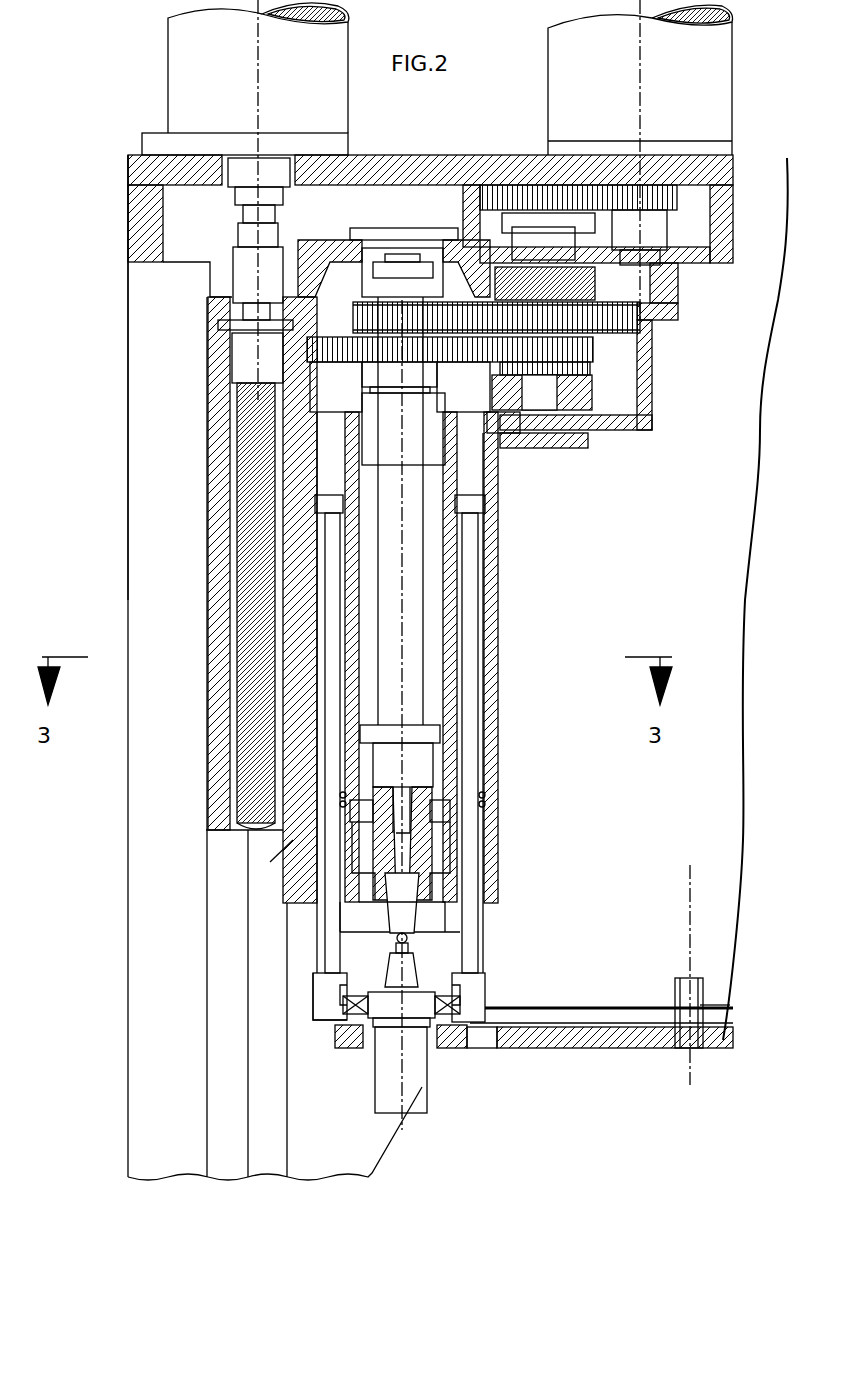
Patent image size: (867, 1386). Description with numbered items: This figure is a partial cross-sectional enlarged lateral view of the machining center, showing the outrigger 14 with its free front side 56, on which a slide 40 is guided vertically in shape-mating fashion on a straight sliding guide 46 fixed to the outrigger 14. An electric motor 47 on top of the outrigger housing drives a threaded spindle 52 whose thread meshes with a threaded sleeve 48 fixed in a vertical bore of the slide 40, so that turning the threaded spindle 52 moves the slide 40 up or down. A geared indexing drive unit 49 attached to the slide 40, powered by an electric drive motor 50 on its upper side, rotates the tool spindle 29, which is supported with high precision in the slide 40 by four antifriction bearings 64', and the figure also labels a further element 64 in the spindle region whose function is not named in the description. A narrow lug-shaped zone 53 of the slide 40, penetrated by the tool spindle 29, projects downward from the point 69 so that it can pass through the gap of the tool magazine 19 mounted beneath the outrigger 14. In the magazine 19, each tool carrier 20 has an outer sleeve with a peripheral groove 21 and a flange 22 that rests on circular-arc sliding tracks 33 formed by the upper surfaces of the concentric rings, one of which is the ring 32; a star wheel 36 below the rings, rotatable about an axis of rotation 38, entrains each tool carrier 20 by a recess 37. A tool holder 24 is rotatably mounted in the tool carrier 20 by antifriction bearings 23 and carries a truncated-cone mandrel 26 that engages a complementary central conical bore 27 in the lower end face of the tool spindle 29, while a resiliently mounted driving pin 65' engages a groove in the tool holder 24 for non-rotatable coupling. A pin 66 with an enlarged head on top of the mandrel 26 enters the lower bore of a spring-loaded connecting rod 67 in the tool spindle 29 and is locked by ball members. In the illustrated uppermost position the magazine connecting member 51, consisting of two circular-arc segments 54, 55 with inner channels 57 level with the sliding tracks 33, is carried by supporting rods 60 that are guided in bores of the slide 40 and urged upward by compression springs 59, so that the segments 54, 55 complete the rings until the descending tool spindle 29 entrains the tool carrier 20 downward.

The outrigger 14 is at (120, 412).
The tool magazine 19 is at (605, 1048).
The tool carrier 20 is at (355, 1045).
The peripheral groove 21 is at (330, 1015).
The flange 22 is at (462, 1000).
The antifriction bearings 23 is at (405, 1020).
The tool holder 24 is at (420, 1090).
The mandrel 26 is at (412, 965).
The central conical bore 27 is at (440, 930).
The tool spindle 29 is at (420, 535).
The ring 32 is at (713, 1010).
The sliding tracks 33 is at (595, 1008).
The star wheel 36 is at (655, 1040).
The recess 37 is at (485, 1040).
The axis of rotation 38 is at (700, 900).
The slide 40 is at (497, 555).
The straight sliding guide 46 is at (147, 1050).
The electric motor 47 is at (330, 100).
The threaded sleeve 48 is at (247, 352).
The geared indexing drive unit 49 is at (678, 285).
The electric drive motor 50 is at (725, 105).
The magazine connecting member 51 is at (313, 985).
The threaded spindle 52 is at (245, 712).
The zone 53 is at (497, 605).
The segment 54 is at (323, 1000).
The segment 55 is at (483, 1012).
The front side 56 is at (128, 540).
The channel 57 is at (350, 970).
The compression springs 59 is at (481, 547).
The supporting rods 60 is at (330, 632).
The clamping device 64 is at (387, 336).
The antifriction bearings 64' is at (480, 838).
The driving pin 65' is at (327, 927).
The pin 66 is at (408, 948).
The connecting rod 67 is at (400, 840).
The point 69 is at (249, 858).